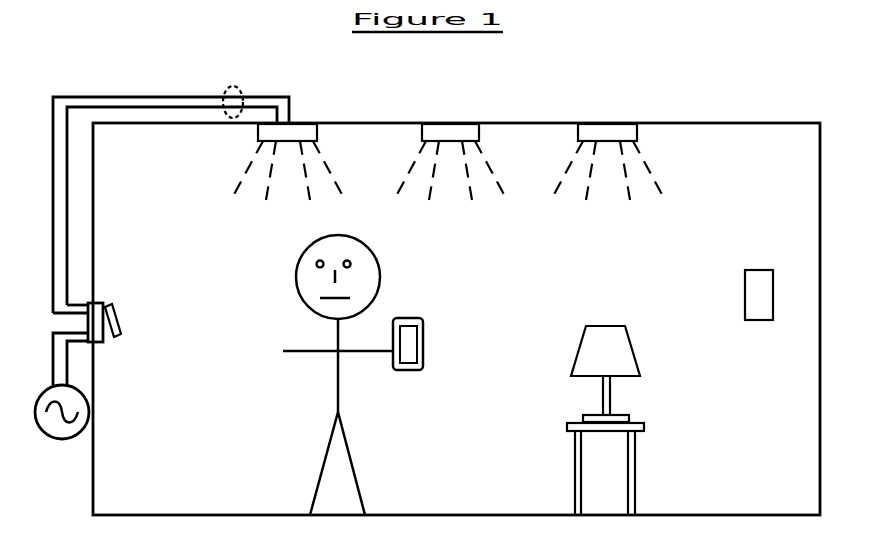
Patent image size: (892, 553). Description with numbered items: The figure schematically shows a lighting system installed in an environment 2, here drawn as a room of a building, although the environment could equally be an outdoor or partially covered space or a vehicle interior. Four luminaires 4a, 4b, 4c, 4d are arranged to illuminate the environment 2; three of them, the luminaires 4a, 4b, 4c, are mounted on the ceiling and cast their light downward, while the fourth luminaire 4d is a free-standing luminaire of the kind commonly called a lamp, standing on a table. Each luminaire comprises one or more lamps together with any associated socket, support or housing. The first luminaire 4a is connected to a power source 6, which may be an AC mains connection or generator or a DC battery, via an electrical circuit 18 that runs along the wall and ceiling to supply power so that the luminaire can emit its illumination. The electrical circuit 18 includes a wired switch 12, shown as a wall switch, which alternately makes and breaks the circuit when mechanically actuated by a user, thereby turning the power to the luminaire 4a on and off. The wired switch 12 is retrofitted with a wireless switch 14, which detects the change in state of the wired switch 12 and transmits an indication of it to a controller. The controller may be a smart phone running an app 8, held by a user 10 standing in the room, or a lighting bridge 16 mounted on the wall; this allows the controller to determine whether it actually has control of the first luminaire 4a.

The environment 2 is at (700, 123).
The first luminaire 4a is at (305, 130).
The luminaire 4b is at (450, 130).
The luminaire 4c is at (606, 130).
The luminaire 4d is at (628, 334).
The power source 6 is at (60, 440).
The smart phone running an app 8 is at (424, 346).
The user 10 is at (350, 453).
The wired switch 12 is at (105, 342).
The wireless switch 14 is at (118, 316).
The lighting bridge 16 is at (762, 270).
The electrical circuit 18 is at (233, 86).